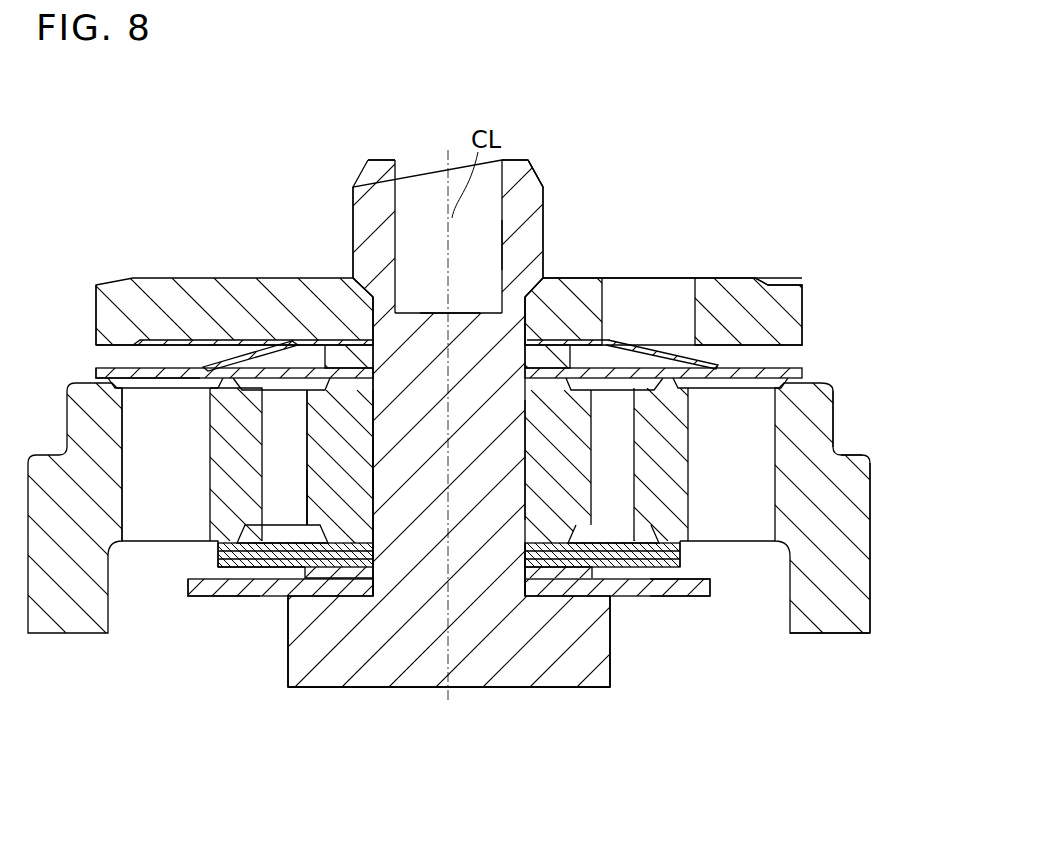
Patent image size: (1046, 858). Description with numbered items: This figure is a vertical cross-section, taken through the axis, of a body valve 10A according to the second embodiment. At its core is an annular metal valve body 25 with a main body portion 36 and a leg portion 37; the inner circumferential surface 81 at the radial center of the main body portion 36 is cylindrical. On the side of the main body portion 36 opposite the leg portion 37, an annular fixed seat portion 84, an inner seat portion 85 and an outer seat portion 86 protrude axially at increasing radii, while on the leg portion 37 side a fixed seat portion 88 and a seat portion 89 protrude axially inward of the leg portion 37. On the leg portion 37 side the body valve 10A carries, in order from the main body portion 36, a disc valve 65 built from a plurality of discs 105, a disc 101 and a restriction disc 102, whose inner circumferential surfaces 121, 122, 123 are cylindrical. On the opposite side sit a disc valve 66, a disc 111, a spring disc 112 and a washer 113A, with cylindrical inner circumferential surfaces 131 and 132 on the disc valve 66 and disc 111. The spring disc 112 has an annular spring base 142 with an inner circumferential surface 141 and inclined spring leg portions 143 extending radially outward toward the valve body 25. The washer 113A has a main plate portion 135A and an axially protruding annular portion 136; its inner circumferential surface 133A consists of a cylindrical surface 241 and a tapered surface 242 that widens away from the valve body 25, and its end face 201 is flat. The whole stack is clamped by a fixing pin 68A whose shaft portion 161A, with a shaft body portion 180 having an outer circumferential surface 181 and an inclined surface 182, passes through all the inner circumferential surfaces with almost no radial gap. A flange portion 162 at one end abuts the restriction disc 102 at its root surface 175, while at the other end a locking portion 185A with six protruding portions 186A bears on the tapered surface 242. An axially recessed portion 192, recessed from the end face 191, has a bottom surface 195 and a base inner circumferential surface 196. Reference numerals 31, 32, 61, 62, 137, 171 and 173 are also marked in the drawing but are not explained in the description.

The body valve 10A is at (805, 178).
The valve body 25 is at (836, 383).
The bracket upper wall 31 is at (835, 430).
The bracket outer wall 32 is at (872, 547).
The main body portion 36 is at (848, 473).
The leg portion 37 is at (826, 615).
The inner cylindrical member 61 is at (277, 420).
The housing 62 is at (140, 440).
The disc valve 65 is at (235, 592).
The disc valve 66 is at (128, 346).
The fixing pin 68A is at (342, 688).
The inner circumferential surface 81 is at (490, 470).
The fixed seat portion 84 is at (335, 388).
The inner seat portion 85 is at (218, 372).
The outer seat portion 86 is at (110, 372).
The fixed seat portion 88 is at (548, 545).
The seat portion 89 is at (670, 546).
The disc 101 is at (573, 582).
The restriction disc 102 is at (702, 593).
The discs 105 is at (233, 570).
The disc 111 is at (290, 345).
The spring disc 112 is at (663, 342).
The washer 113A is at (802, 279).
The inner circumferential surface 121 is at (410, 562).
The inner circumferential surface 122 is at (375, 572).
The inner circumferential surface 123 is at (527, 590).
The inner circumferential surface 131 is at (438, 312).
The inner circumferential surface 132 is at (397, 312).
The inner circumferential surface 133A is at (352, 202).
The main plate portion 135A is at (157, 292).
The annular portion 136 is at (115, 294).
The upper block inner portion 137 is at (695, 312).
The inner circumferential surface 141 is at (425, 312).
The spring base 142 is at (228, 382).
The spring leg portions 143 is at (220, 366).
The shaft portion 161A is at (466, 540).
The flange portion 162 is at (317, 663).
The lower block side face 171 is at (612, 672).
The lower block side face 173 is at (287, 637).
The root surface 175 is at (613, 585).
The shaft body portion 180 is at (355, 492).
The outer circumferential surface 181 is at (383, 472).
The inclined surface 182 is at (538, 165).
The locking portion 185A is at (548, 197).
The protruding portions 186A is at (372, 300).
The end face 191 is at (418, 312).
The axially recessed portion 192 is at (490, 212).
The bottom surface 195 is at (518, 318).
The base inner circumferential surface 196 is at (502, 245).
The end face 201 is at (740, 279).
The cylindrical surface 241 is at (635, 279).
The tapered surface 242 is at (318, 350).